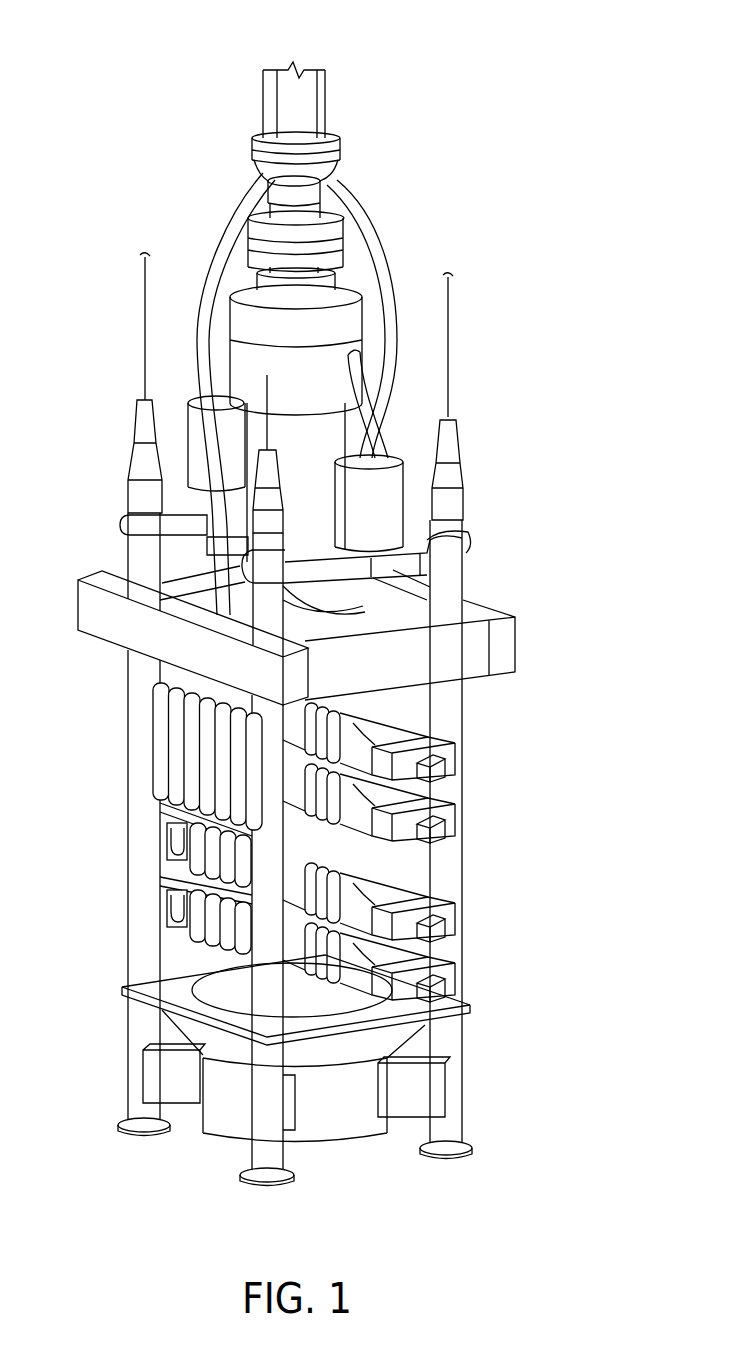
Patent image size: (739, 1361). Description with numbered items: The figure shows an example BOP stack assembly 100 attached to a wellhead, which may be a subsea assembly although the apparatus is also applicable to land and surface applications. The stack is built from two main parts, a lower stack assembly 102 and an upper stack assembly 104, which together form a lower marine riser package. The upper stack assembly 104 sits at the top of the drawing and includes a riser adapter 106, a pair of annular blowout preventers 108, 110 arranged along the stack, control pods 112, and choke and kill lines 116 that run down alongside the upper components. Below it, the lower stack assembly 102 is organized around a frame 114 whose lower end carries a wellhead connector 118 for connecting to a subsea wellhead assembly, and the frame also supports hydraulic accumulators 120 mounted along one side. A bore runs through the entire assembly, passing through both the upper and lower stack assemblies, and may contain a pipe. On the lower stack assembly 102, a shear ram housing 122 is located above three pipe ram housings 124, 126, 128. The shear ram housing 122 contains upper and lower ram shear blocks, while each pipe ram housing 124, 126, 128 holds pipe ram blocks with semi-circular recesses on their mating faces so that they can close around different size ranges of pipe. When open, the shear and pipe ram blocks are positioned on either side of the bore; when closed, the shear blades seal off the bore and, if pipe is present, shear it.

The BOP stack assembly 100 is at (630, 108).
The lower stack assembly 102 is at (492, 742).
The upper stack assembly 104 is at (467, 312).
The riser adapter 106 is at (288, 176).
The annular blowout preventer 108 is at (240, 314).
The annular blowout preventer 110 is at (240, 572).
The control pods 112 is at (198, 430).
The frame 114 is at (453, 882).
The choke and kill lines 116 is at (233, 222).
The wellhead connector 118 is at (330, 1117).
The hydraulic accumulators 120 is at (173, 722).
The shear ram housing 122 is at (377, 727).
The pipe ram housing 124 is at (390, 797).
The pipe ram housing 126 is at (373, 892).
The pipe ram housing 128 is at (385, 967).